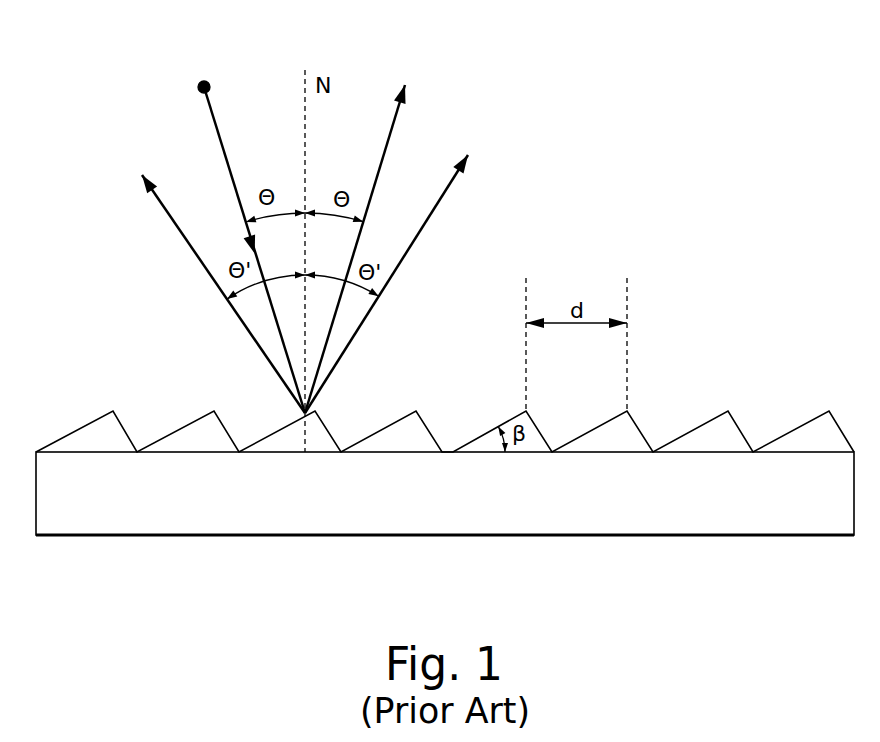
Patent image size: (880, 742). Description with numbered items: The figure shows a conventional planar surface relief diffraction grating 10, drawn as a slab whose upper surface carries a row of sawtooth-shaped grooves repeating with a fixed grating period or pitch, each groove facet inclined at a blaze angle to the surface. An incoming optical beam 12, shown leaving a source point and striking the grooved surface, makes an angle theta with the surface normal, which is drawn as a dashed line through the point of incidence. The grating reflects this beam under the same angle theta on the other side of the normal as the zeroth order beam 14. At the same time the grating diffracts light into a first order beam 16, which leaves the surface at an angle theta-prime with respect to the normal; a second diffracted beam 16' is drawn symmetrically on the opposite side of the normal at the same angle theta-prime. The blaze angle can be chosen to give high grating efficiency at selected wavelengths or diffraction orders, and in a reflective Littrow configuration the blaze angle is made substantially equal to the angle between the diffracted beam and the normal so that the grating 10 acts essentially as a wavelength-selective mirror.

The surface relief diffraction grating 10 is at (132, 536).
The incoming optical beam 12 is at (210, 109).
The 0th order beam 14 is at (394, 123).
The 1st order beam 16 is at (420, 284).
The negative first order diffracted beam 16' is at (183, 290).